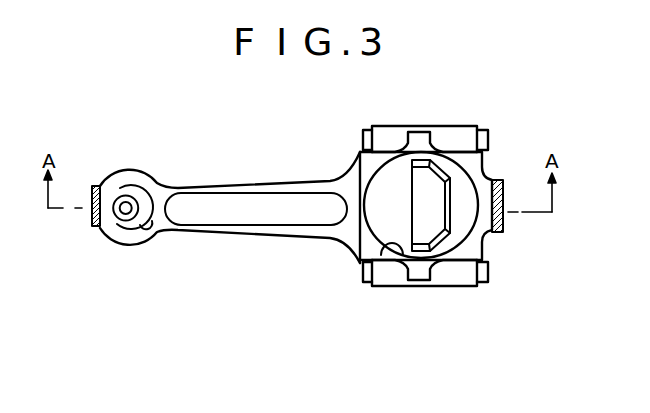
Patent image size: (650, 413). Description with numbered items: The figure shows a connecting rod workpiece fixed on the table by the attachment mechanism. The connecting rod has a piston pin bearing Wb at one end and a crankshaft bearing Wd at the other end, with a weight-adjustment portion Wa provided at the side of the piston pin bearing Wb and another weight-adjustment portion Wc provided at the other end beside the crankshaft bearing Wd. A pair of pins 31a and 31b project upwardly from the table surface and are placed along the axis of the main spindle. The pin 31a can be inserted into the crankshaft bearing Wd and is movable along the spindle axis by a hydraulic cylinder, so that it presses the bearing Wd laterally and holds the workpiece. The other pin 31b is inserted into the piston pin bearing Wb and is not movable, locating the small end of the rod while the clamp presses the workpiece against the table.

The pin 31a is at (430, 198).
The pin 31b is at (126, 203).
The weight-adjustment portion Wa is at (92, 218).
The piston pin bearing Wb is at (148, 224).
The weight-adjustment portion Wc is at (504, 226).
The crankshaft bearing Wd is at (402, 253).